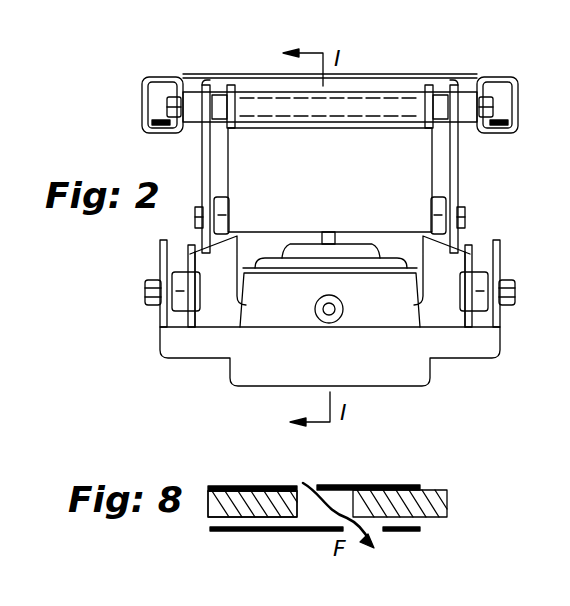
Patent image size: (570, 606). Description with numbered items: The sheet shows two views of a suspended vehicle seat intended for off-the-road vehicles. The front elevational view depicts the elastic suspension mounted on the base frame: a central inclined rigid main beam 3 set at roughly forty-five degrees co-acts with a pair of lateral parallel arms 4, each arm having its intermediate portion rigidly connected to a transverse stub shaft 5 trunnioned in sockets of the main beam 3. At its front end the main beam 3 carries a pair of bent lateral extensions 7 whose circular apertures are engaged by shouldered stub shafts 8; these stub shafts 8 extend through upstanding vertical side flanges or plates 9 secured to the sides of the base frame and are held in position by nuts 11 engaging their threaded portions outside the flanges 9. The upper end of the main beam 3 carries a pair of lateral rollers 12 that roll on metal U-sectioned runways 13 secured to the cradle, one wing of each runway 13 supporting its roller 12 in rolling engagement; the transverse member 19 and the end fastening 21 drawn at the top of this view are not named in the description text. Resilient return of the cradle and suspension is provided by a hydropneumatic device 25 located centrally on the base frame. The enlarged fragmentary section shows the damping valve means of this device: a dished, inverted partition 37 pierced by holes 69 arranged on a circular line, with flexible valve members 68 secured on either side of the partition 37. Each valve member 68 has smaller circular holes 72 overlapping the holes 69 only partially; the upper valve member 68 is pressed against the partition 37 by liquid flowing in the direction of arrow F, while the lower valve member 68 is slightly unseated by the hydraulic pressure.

In FIG. 2, the main beam 3 is at (277, 162).
In FIG. 2, the lateral parallel arms 4 is at (456, 157).
In FIG. 2, the transverse stub shaft 5 is at (220, 210).
In FIG. 2, the bent lateral extensions 7 is at (215, 298).
In FIG. 2, the shouldered stub shafts 8 is at (186, 294).
In FIG. 2, the upstanding vertical side flanges 9 is at (160, 255).
In FIG. 2, the nuts 11 is at (146, 292).
In FIG. 2, the lateral rollers 12 is at (163, 108).
In FIG. 2, the U-sectioned runways 13 is at (143, 133).
In FIG. 2, the cross bar 19 is at (470, 84).
In FIG. 2, the nut 21 is at (170, 98).
In FIG. 2, the hydropneumatic device 25 is at (265, 310).
In FIG. 8, the partition 37 is at (209, 520).
In FIG. 8, the flexible valve members 68 is at (226, 486).
In FIG. 8, the holes 69 is at (343, 485).
In FIG. 8, the circular holes 72 is at (289, 485).